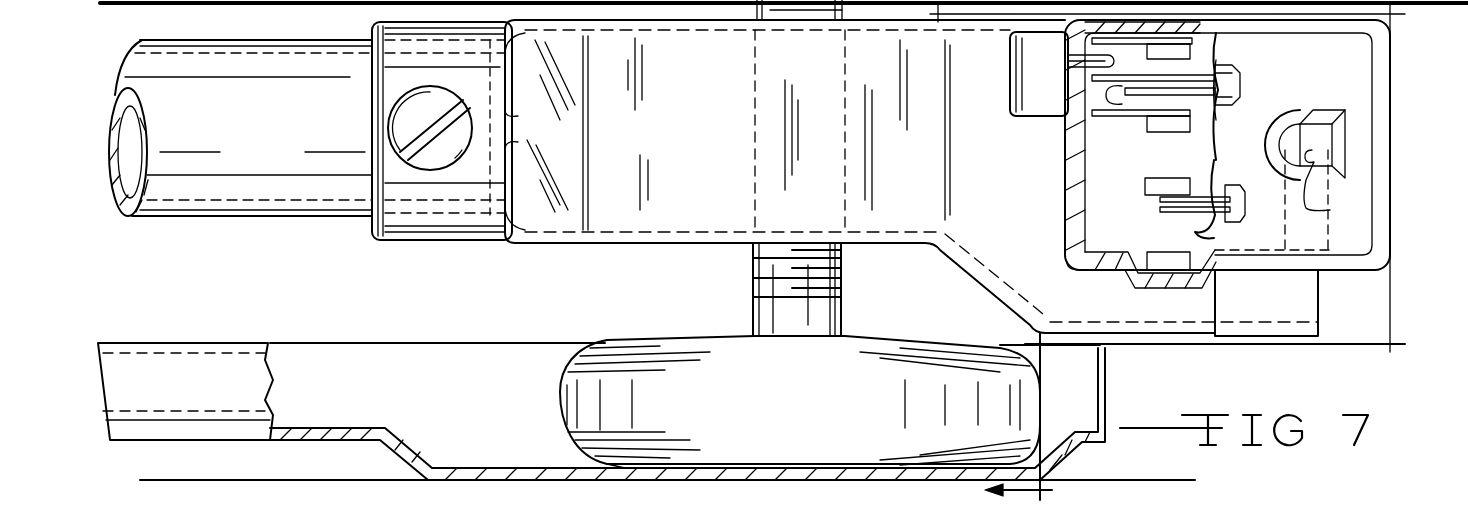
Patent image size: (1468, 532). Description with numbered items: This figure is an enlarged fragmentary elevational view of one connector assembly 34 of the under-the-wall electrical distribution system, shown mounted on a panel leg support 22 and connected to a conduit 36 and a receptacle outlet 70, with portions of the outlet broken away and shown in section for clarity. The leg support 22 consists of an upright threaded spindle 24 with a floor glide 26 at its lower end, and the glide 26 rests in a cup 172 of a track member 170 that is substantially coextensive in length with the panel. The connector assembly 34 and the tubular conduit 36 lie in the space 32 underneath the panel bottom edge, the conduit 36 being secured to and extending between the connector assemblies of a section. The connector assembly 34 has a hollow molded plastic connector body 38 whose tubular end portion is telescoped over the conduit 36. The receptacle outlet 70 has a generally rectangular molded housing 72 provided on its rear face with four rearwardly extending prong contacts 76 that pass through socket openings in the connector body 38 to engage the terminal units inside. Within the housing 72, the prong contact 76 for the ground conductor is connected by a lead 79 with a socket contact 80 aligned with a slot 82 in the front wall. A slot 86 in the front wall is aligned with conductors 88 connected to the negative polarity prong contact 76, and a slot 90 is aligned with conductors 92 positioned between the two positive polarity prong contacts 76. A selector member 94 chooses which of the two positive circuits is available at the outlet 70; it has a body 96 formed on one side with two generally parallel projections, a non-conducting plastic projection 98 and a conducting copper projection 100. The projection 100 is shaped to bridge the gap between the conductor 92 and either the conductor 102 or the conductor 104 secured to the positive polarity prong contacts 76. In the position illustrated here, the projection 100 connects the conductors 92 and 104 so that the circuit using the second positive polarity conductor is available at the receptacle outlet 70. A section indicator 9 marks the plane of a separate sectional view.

The section line 9 is at (1003, 420).
The leg support 22 is at (736, 314).
The threaded spindle 24 is at (845, 273).
The floor glide 26 is at (826, 408).
The space 32 is at (296, 292).
The connector assembly 34 is at (562, 255).
The tubular conduit 36 is at (272, 139).
The connector body 38 is at (706, 128).
The receptacle outlet 70 is at (1398, 223).
The housing 72 is at (1355, 68).
The prong contact 76 is at (1190, 55).
The lead 79 is at (1162, 252).
The socket contact 80 is at (1333, 186).
The slot 82 is at (1320, 138).
The slot 86 is at (1246, 203).
The conductors 88 is at (1214, 236).
The slot 90 is at (1240, 85).
The conductors 92 is at (1122, 95).
The selector member 94 is at (1038, 118).
The body 96 is at (1010, 60).
The projection 98 is at (1072, 62).
The projection 100 is at (1072, 150).
The conductor 102 is at (1192, 42).
The conductor 104 is at (1105, 117).
The track member 170 is at (328, 428).
The cup 172 is at (522, 466).